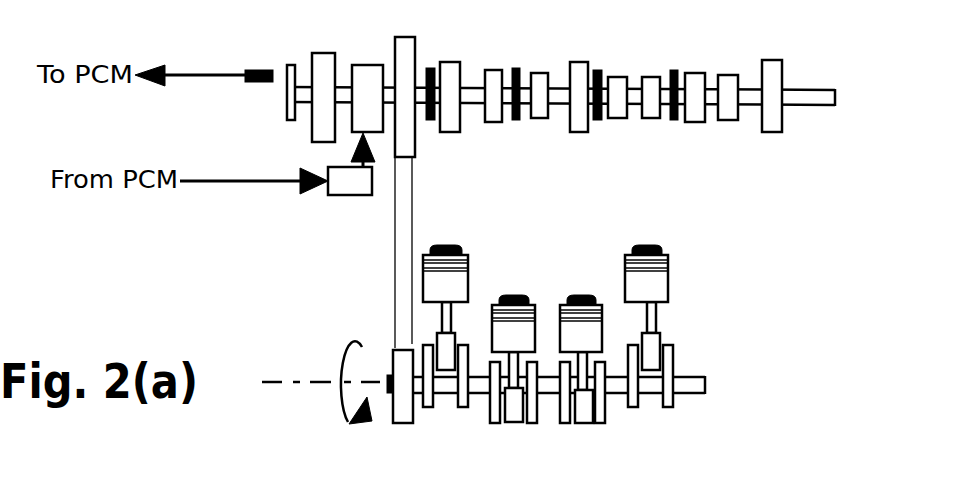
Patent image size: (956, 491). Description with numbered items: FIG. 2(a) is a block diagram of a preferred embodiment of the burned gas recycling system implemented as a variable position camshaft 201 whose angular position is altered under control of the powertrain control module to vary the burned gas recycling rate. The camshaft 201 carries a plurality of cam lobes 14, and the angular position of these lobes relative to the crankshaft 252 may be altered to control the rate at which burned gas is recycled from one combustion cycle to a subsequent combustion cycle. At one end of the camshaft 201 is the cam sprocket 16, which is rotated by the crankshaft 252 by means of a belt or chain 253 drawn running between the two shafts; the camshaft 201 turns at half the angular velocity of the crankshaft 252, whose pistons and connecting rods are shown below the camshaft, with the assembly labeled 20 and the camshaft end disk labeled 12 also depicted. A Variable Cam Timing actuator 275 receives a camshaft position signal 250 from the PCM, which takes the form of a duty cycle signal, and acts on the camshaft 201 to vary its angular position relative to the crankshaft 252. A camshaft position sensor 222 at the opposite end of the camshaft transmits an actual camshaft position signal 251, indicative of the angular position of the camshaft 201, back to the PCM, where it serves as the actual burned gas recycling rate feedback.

The camshaft end disk 12 is at (775, 134).
The cam lobes 14 is at (578, 62).
The cam sprocket 16 is at (414, 62).
The crankshaft assembly 20 is at (512, 358).
The variable position camshaft 201 is at (832, 87).
The camshaft position sensor 222 is at (256, 68).
The camshaft position signal 250 is at (272, 184).
The actual camshaft position signal 251 is at (179, 72).
The crankshaft 252 is at (703, 397).
The belt or chain 253 is at (413, 225).
The Variable Cam Timing (VCT) actuator 275 is at (340, 196).